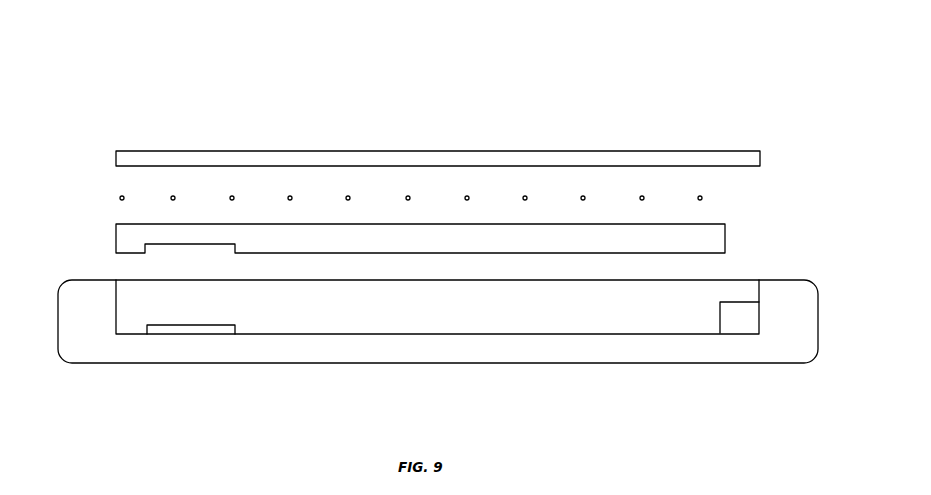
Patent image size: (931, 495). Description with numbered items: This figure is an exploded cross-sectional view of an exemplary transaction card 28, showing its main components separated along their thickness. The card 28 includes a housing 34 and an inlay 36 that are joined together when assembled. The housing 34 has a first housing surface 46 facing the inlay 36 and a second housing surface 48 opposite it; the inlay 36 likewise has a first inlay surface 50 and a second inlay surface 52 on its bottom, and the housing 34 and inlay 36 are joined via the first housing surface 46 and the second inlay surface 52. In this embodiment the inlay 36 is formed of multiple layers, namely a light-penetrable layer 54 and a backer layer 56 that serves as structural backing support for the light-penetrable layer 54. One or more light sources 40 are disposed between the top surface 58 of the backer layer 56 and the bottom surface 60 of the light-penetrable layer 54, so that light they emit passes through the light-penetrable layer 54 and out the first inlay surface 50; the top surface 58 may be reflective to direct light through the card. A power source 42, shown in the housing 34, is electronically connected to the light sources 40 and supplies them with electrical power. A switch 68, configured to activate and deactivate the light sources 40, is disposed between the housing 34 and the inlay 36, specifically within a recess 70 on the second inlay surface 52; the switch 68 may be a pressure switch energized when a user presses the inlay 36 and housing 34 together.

The card 28 is at (430, 268).
The housing 34 is at (87, 337).
The inlay 36 is at (787, 105).
The light sources 40 is at (234, 199).
The power source 42 is at (737, 320).
The first housing surface 46 is at (605, 333).
The second housing surface 48 is at (655, 363).
The first inlay surface 50 is at (448, 130).
The second inlay surface 52 is at (555, 253).
The light-penetrable layer 54 is at (730, 159).
The backer layer 56 is at (448, 245).
The top surface of backer layer 58 is at (557, 224).
The bottom surface of light-penetrable layer 60 is at (497, 166).
The switch 68 is at (188, 325).
The recess 70 is at (166, 254).